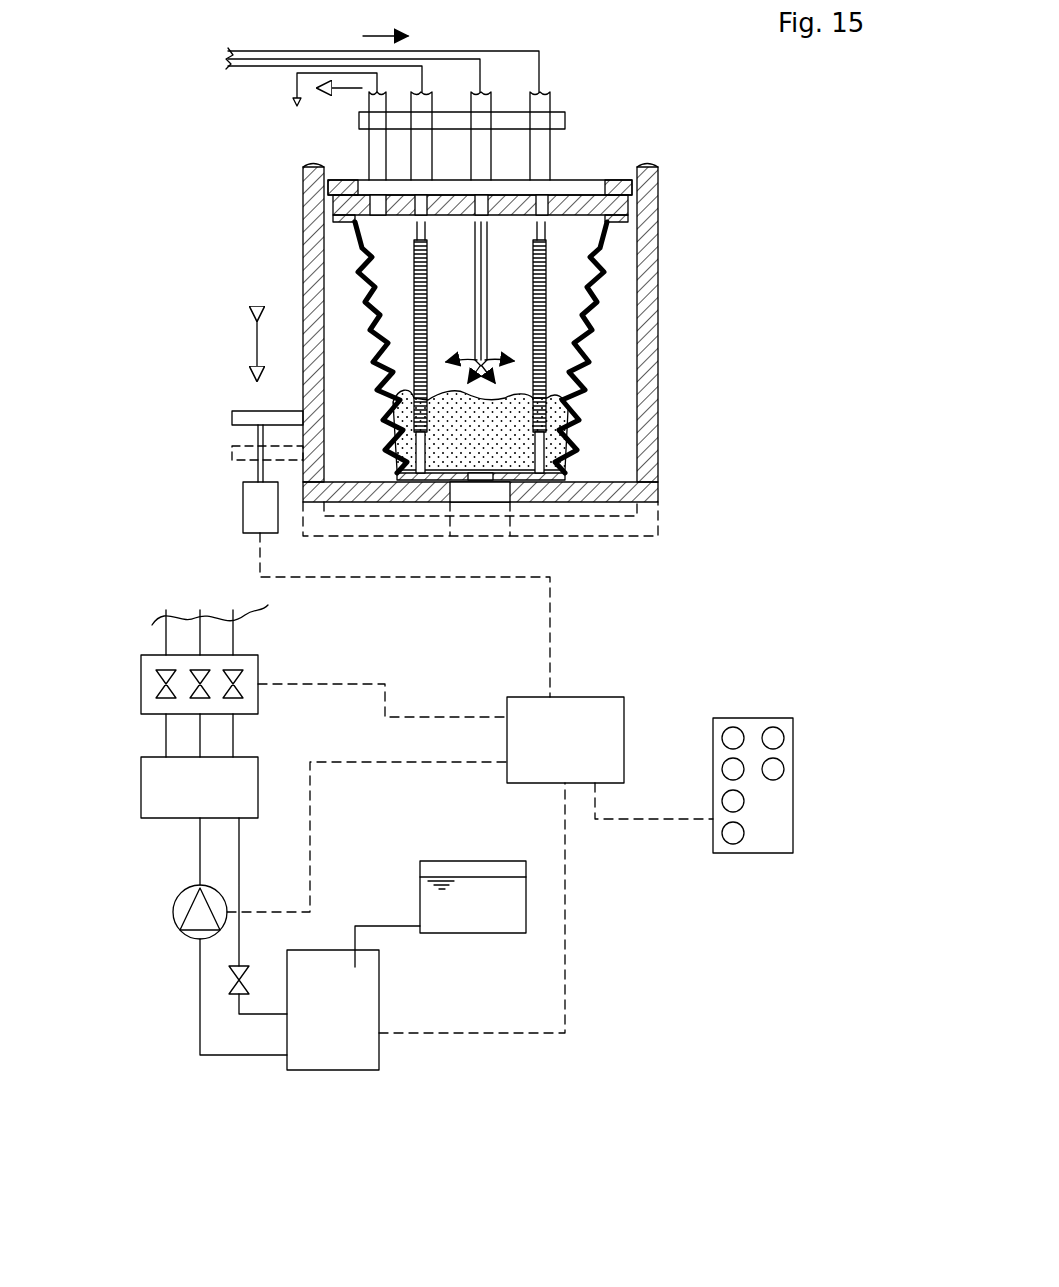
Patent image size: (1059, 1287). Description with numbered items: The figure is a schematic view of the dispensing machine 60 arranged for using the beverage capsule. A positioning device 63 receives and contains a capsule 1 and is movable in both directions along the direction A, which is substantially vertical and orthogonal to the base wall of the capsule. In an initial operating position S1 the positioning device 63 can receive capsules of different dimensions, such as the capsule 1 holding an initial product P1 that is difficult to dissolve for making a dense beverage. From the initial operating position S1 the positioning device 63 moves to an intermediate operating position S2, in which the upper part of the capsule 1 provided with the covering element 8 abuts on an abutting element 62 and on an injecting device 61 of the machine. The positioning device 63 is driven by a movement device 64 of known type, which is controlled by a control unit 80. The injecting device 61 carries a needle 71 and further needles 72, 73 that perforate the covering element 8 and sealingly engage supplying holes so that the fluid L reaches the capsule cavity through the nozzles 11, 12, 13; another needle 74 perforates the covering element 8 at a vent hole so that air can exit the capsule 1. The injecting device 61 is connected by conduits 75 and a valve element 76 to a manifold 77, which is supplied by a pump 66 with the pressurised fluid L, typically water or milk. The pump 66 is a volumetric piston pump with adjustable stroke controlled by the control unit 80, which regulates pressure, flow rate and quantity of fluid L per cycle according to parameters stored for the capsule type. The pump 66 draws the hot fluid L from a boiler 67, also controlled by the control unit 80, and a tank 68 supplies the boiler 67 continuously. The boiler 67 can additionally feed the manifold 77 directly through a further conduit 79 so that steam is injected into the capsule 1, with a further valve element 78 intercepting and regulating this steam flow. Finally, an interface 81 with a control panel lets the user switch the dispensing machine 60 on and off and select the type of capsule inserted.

The capsule 1 is at (598, 390).
The covering element 8 is at (458, 190).
The nozzle 11 is at (487, 300).
The nozzle 12 is at (415, 273).
The nozzle 13 is at (604, 268).
The dispensing machine 60 is at (752, 1082).
The injecting device 61 is at (617, 112).
The abutting element 62 is at (618, 167).
The positioning device 63 is at (648, 297).
The movement device 64 is at (262, 508).
The pump 66 is at (187, 925).
The boiler 67 is at (330, 1058).
The tank 68 is at (502, 918).
The needle 71 is at (542, 180).
The further needle 72 is at (418, 158).
The further needle 73 is at (478, 162).
The another needle 74 is at (375, 142).
The conduits 75 is at (230, 63).
The valve element 76 is at (268, 668).
The manifold 77 is at (162, 807).
The further valve element 78 is at (237, 983).
The further conduit 79 is at (238, 850).
The control unit 80 is at (607, 713).
The interface 81 is at (755, 835).
The direction A is at (257, 350).
The fluid L is at (495, 380).
The initial product P1 is at (497, 483).
The initial operating position S1 is at (680, 518).
The intermediate operating position S2 is at (727, 415).